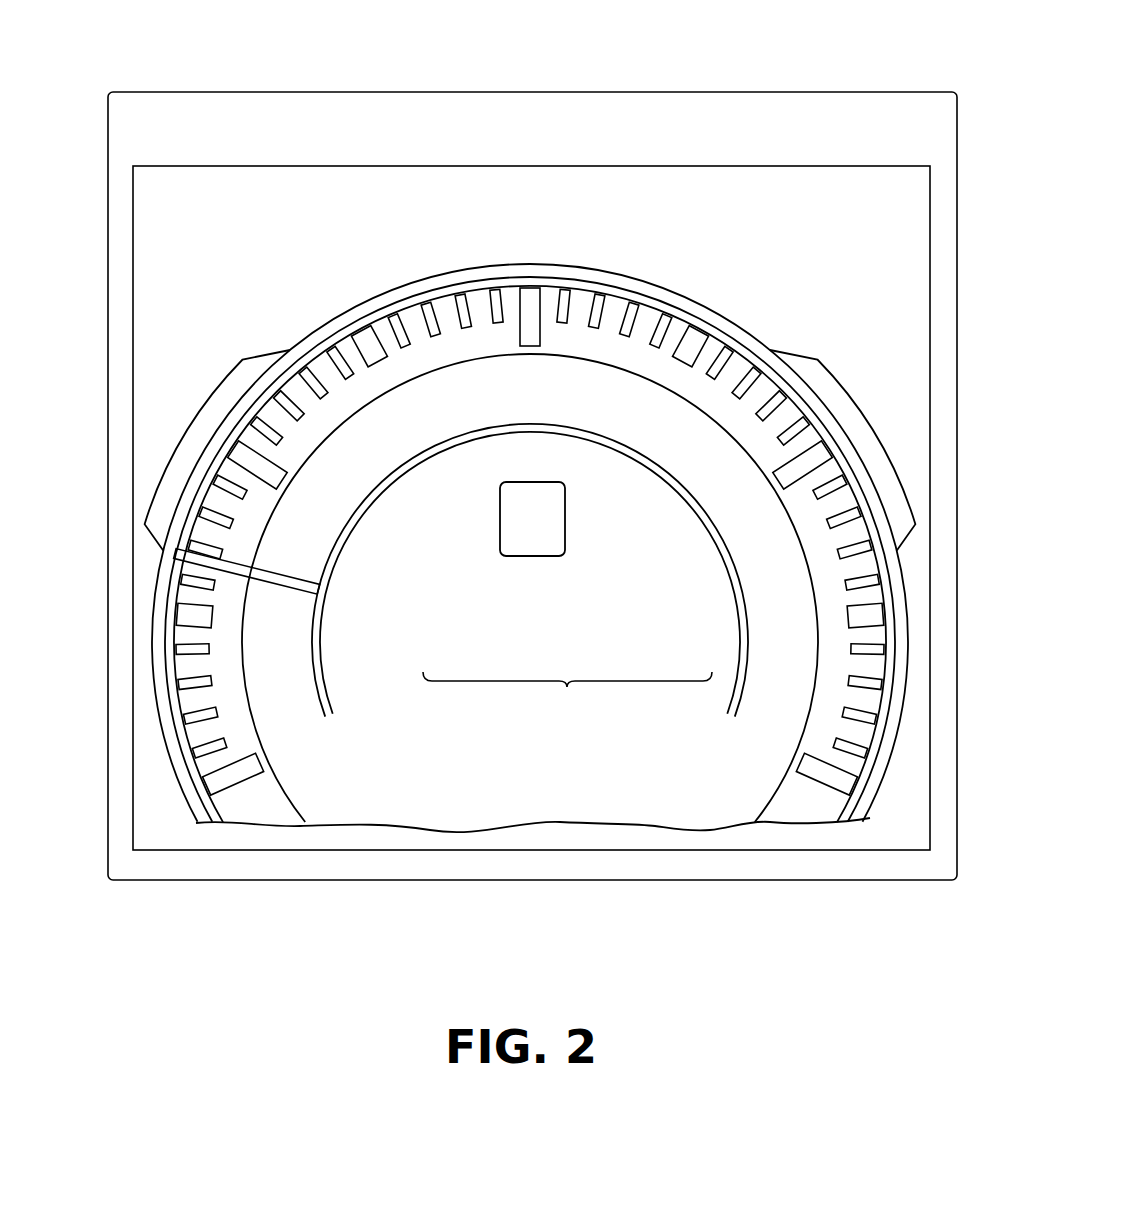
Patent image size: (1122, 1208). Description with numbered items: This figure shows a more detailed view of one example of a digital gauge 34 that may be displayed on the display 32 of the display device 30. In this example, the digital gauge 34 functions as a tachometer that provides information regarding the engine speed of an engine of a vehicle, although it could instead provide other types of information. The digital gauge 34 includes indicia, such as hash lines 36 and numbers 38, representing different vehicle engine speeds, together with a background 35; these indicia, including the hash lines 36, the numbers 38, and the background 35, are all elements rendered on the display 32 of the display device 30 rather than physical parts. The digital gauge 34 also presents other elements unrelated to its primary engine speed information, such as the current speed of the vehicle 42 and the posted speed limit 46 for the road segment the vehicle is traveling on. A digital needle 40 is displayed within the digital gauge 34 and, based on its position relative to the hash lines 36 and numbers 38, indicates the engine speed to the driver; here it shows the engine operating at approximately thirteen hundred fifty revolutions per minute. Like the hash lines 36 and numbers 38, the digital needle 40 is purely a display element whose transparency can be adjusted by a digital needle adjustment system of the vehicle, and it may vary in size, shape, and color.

The display device 30 is at (658, 92).
The display 32 is at (738, 166).
The digital gauge 34 is at (336, 290).
The background 35 is at (377, 648).
The hash lines 36 is at (289, 378).
The numbers 38 is at (512, 382).
The digital needle 40 is at (278, 578).
The current speed of the vehicle 42 is at (567, 631).
The posted speed limit 46 is at (567, 508).